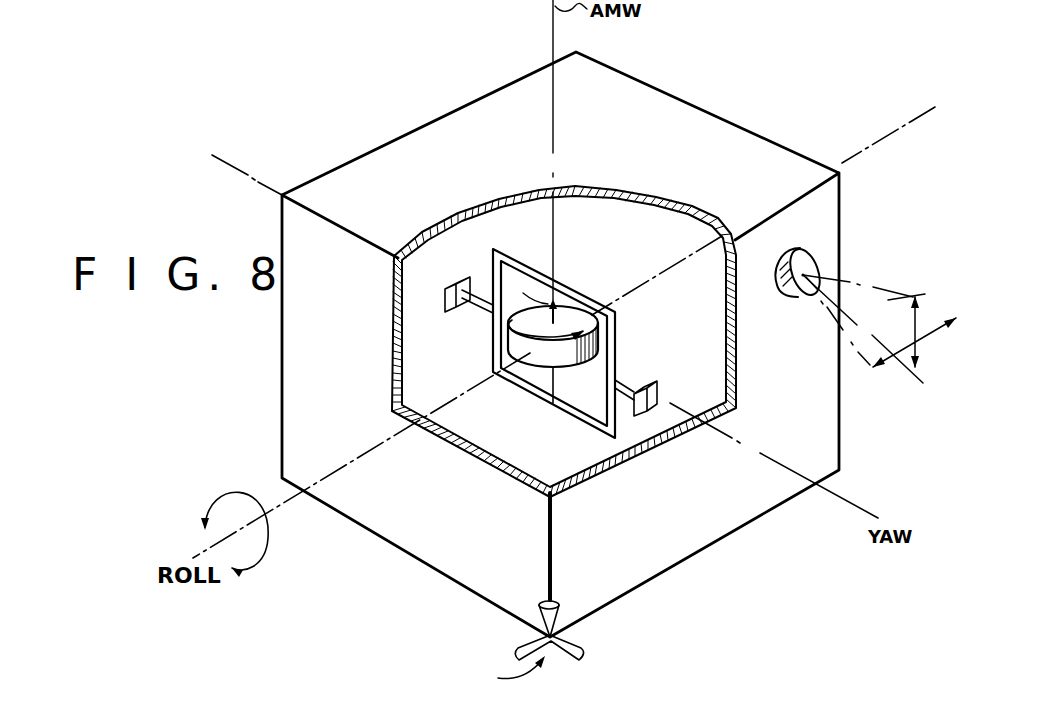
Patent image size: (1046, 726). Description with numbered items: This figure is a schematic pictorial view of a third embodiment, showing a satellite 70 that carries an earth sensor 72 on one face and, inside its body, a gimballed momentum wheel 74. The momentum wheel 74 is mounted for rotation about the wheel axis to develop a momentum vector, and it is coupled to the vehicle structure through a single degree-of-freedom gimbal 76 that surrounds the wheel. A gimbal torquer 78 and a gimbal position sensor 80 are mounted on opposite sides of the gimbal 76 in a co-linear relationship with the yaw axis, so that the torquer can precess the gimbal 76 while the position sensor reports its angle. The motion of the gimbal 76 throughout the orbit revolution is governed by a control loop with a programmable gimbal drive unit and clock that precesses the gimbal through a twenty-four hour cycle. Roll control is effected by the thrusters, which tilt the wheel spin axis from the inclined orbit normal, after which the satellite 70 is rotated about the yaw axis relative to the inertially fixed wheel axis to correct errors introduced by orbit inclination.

The satellite 70 is at (697, 94).
The earth sensor 72 is at (812, 250).
The gimballed momentum wheel 74 is at (532, 323).
The single degree-of-freedom gimbal 76 is at (566, 289).
The gimbal torquer 78 is at (645, 384).
The gimbal position sensor 80 is at (473, 262).